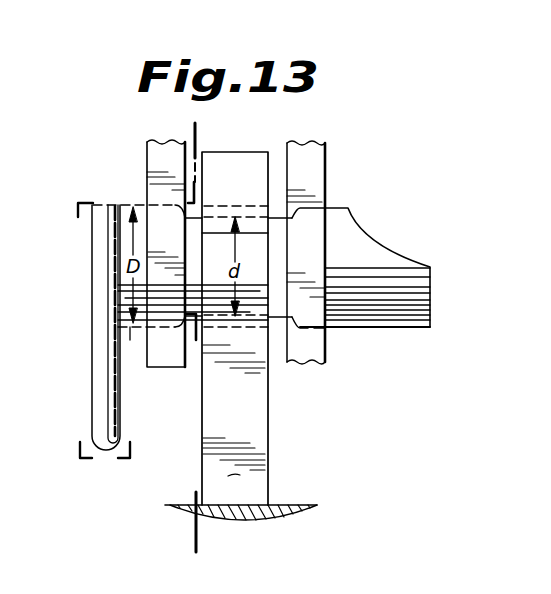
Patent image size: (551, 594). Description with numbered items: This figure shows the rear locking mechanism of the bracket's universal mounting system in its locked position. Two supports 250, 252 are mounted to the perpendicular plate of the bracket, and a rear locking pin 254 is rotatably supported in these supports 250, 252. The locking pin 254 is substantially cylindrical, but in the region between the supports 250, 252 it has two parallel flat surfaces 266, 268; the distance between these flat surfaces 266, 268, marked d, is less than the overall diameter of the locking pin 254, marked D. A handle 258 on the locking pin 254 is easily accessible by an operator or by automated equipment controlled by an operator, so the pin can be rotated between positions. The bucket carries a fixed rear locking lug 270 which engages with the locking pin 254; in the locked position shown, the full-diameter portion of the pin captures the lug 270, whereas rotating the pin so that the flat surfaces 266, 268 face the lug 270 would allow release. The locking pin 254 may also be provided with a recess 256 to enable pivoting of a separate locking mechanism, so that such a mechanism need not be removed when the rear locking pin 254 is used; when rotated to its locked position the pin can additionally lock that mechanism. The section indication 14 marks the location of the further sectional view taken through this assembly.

The section line for FIG. 14 is at (178, 528).
The support 250 is at (328, 175).
The support 252 is at (155, 155).
The rear locking pin 254 is at (400, 328).
The recess 256 is at (368, 233).
The handle 258 is at (100, 382).
The flat surface 266 is at (275, 218).
The flat surface 268 is at (197, 343).
The rear locking lug 270 is at (258, 442).